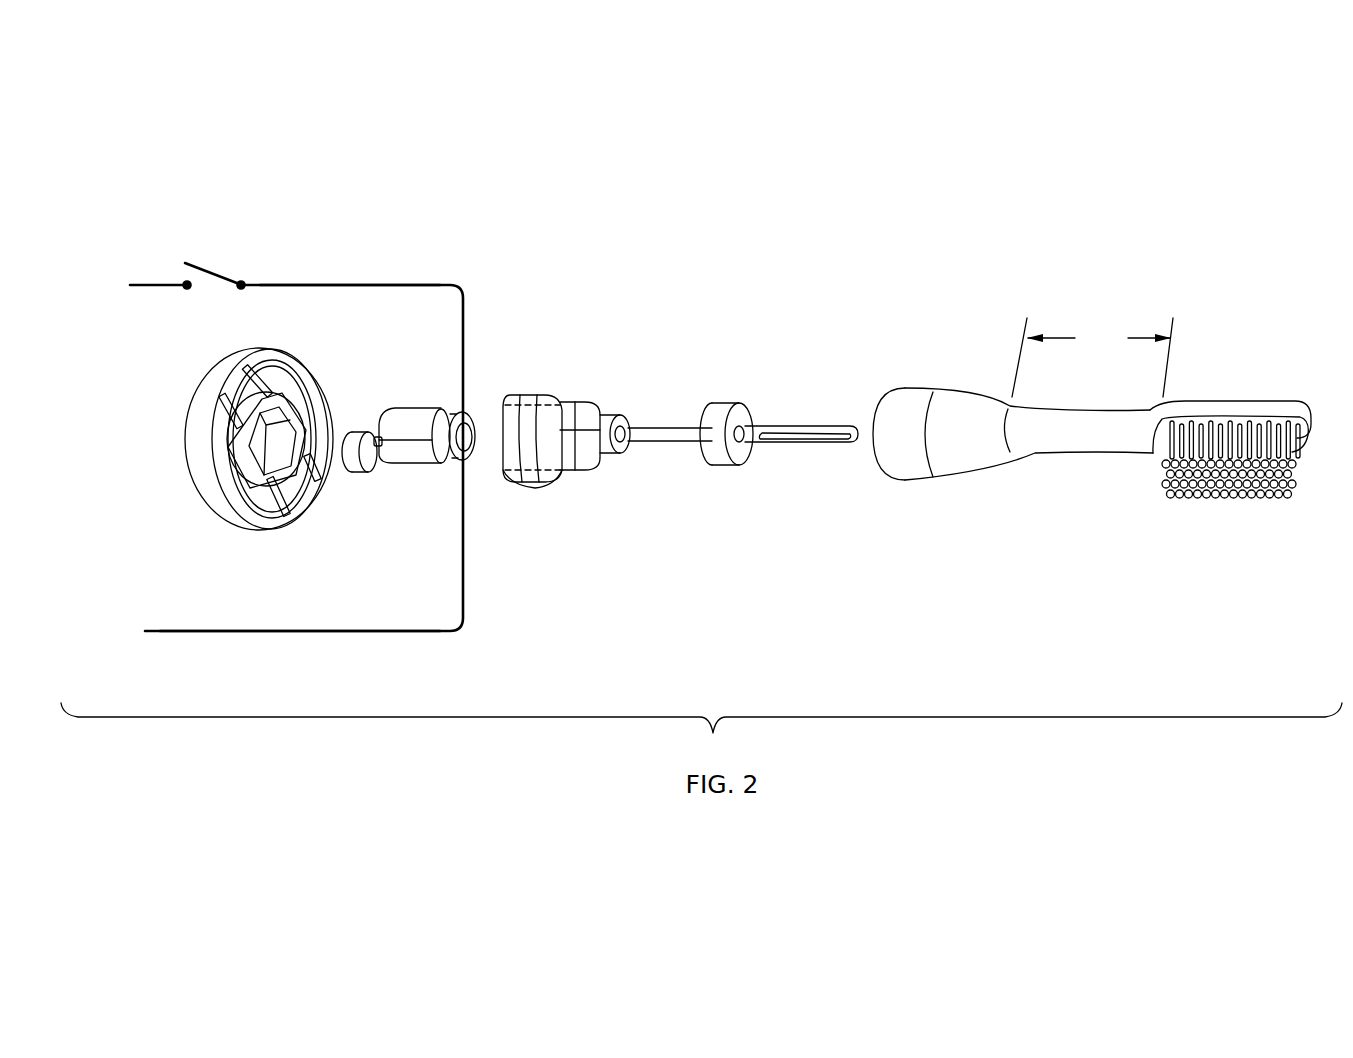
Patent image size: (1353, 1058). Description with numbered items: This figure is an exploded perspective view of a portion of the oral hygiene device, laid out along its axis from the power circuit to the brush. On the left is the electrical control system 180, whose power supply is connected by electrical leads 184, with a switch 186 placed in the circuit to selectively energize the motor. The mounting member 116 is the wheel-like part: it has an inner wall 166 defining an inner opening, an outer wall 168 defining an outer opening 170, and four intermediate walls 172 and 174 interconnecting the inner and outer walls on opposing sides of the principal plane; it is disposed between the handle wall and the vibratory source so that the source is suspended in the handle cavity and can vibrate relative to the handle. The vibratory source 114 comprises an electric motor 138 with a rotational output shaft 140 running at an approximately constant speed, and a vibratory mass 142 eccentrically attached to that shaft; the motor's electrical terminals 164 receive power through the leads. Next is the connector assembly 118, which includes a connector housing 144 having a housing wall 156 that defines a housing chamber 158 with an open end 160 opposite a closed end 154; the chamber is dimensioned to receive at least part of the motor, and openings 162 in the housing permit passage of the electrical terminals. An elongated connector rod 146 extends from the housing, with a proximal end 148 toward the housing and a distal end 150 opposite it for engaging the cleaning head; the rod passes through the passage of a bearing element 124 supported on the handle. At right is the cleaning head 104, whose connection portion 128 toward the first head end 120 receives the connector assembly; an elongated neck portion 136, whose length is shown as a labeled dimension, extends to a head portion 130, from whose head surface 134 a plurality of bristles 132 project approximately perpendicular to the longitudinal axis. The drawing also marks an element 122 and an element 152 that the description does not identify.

The cleaning head 104 is at (1107, 434).
The vibratory source 114 is at (413, 469).
The mounting member 116 is at (208, 522).
The connector assembly 118 is at (740, 431).
The first head end 120 is at (910, 493).
The bristle tuft field 122 is at (1233, 508).
The bearing element 124 is at (743, 398).
The connection portion 128 is at (910, 388).
The head portion 130 is at (1230, 397).
The bristles 132 is at (1275, 495).
The head surface 134 is at (1162, 447).
The elongated neck portion 136 is at (1075, 455).
The electric motor 138 is at (415, 408).
The rotational output shaft 140 is at (375, 472).
The vibratory mass 142 is at (353, 437).
The connector housing 144 is at (553, 497).
The connector rod 146 is at (683, 452).
The proximal end 148 is at (637, 438).
The distal end 150 is at (807, 425).
The bushing 152 is at (603, 413).
The closed end 154 is at (590, 487).
The housing wall 156 is at (562, 455).
The housing chamber 158 is at (525, 390).
The open end 160 is at (584, 442).
The openings 162 is at (570, 390).
The electrical terminals 164 is at (458, 418).
The inner wall 166 is at (290, 403).
The outer wall 168 is at (202, 473).
The outer opening 170 is at (242, 383).
The intermediate walls 172 is at (227, 400).
The intermediate walls 174 is at (278, 503).
The electrical control system 180 is at (385, 268).
The electrical leads 184 is at (285, 285).
The switch 186 is at (218, 260).